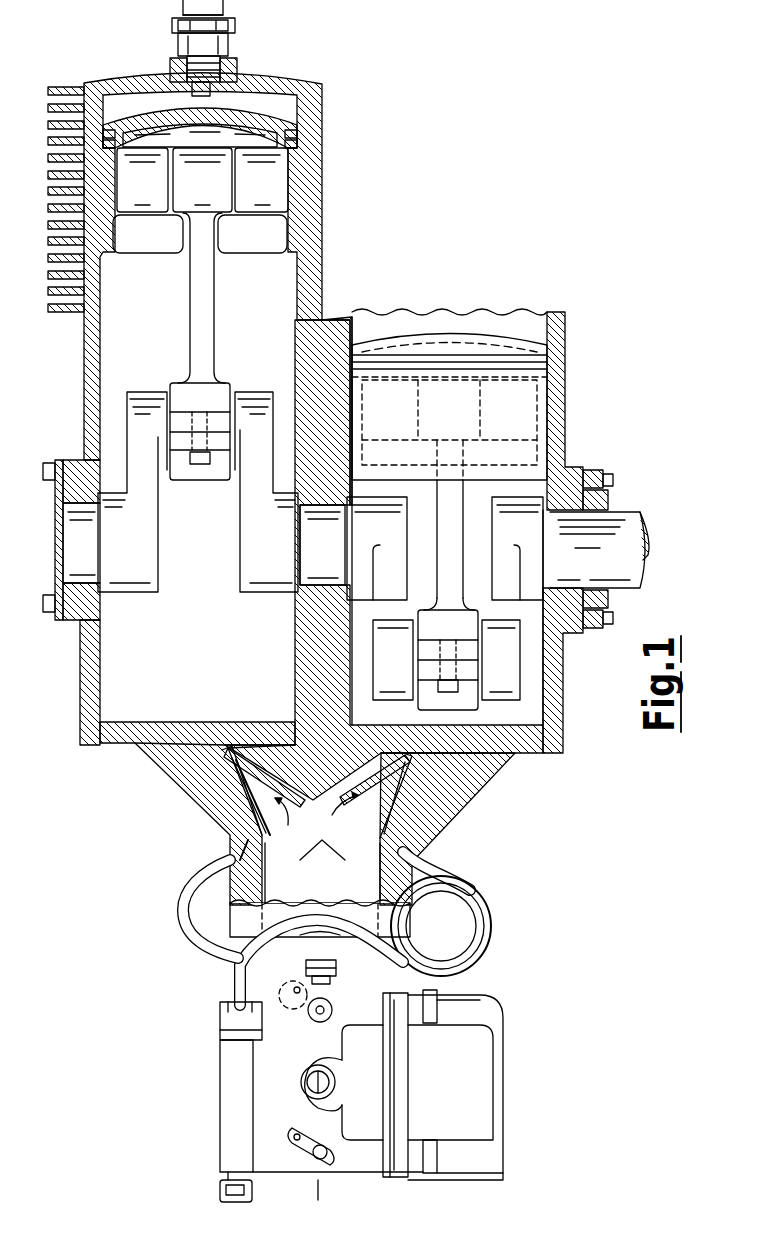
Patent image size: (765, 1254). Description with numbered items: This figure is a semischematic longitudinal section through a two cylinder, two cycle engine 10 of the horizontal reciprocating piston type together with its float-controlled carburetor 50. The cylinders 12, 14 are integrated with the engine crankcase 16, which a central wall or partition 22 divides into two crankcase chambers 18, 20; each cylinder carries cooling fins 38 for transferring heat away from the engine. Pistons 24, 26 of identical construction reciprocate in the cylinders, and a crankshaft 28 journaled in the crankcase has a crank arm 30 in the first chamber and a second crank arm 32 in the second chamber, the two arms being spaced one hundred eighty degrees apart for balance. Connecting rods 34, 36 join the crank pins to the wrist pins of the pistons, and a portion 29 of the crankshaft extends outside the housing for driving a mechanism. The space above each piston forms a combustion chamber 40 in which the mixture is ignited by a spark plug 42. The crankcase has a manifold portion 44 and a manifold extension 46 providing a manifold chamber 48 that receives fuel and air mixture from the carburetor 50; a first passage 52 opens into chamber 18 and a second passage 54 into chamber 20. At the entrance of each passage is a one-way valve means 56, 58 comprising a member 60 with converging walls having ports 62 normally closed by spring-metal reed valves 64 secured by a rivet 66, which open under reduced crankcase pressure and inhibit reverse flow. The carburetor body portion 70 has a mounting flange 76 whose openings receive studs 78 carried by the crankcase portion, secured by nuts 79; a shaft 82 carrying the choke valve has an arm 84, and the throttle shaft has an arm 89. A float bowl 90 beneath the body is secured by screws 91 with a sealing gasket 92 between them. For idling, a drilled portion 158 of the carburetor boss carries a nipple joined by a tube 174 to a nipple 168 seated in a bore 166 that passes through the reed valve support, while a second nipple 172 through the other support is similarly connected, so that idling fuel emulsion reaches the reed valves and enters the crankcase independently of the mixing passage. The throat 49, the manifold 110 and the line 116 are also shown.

The engine 10 is at (330, 212).
The cylinder 12 is at (316, 160).
The cylinder 14 is at (565, 370).
The engine crankcase 16 is at (78, 652).
The crankcase chamber 18 is at (122, 700).
The crankcase chamber 20 is at (525, 712).
The central wall or partition 22 is at (320, 632).
The piston 24 is at (150, 112).
The piston 26 is at (432, 335).
The crankshaft 28 is at (190, 670).
The crankshaft portion 29 is at (632, 548).
The crank arm 30 is at (140, 392).
The second crank arm 32 is at (498, 700).
The connecting rod 34 is at (190, 300).
The connecting rod 36 is at (445, 532).
The cooling fins 38 is at (58, 290).
The combustion chamber 40 is at (175, 110).
The spark plug 42 is at (200, 60).
The manifold portion 44 is at (190, 763).
The manifold extension 46 is at (379, 931).
The manifold chamber 48 is at (320, 890).
The carburetor throat 49 is at (311, 868).
The carburetor 50 is at (215, 1088).
The first passage 52 is at (215, 740).
The second passage 54 is at (455, 780).
The one-way valve means 56 is at (287, 832).
The one-way valve means 58 is at (333, 817).
The fitting or member 60 is at (272, 825).
The openings or ports 62 is at (225, 745).
The reed valves 64 is at (235, 785).
The rivet 66 is at (245, 810).
The carburetor body portion 70 is at (245, 1100).
The mounting flange 76 is at (365, 928).
The studs 78 is at (330, 990).
The nuts 79 is at (310, 965).
The shaft 82 is at (318, 1160).
The arm 84 is at (290, 1165).
The arm 89 is at (296, 1002).
The float bowl 90 is at (490, 1080).
The screws 91 is at (410, 1030).
The sealing gasket 92 is at (392, 1135).
The intake manifold 110 is at (355, 805).
The fuel line 116 is at (482, 960).
The angularly projecting portion 158 is at (222, 1018).
The bore 166 is at (245, 845).
The tubular fitting or nipple 168 is at (190, 863).
The tubular fitting or nipple 172 is at (462, 885).
The tube 174 is at (180, 895).